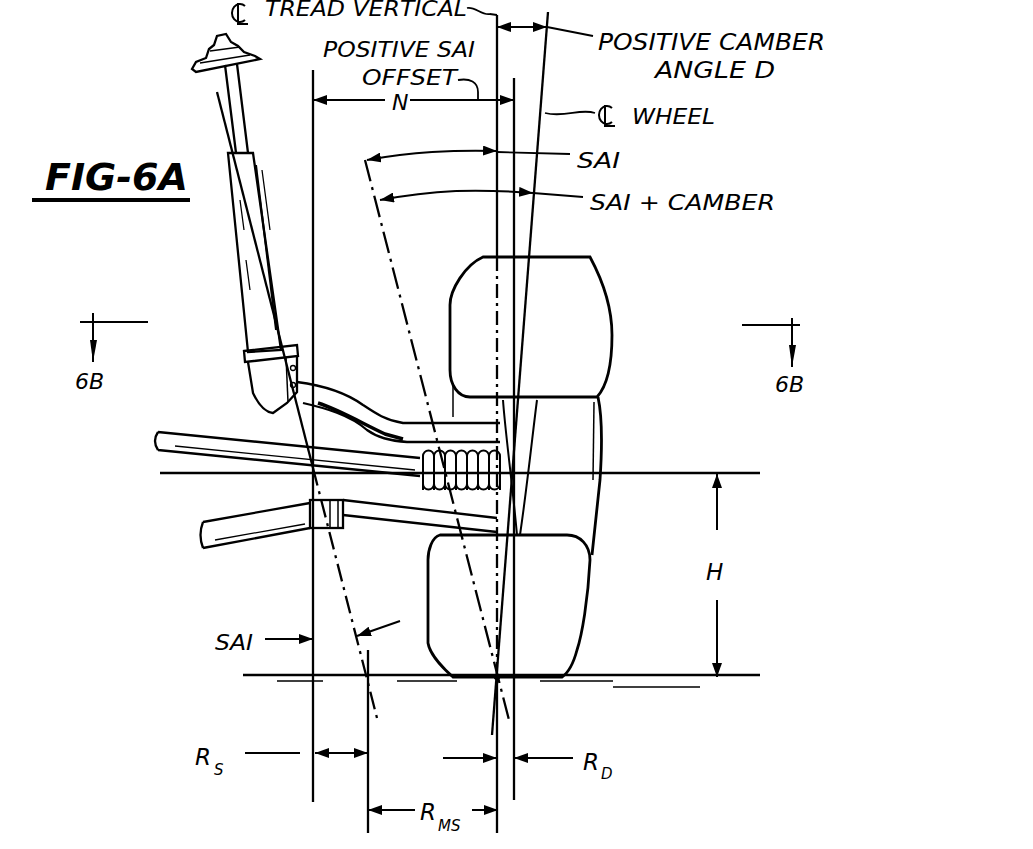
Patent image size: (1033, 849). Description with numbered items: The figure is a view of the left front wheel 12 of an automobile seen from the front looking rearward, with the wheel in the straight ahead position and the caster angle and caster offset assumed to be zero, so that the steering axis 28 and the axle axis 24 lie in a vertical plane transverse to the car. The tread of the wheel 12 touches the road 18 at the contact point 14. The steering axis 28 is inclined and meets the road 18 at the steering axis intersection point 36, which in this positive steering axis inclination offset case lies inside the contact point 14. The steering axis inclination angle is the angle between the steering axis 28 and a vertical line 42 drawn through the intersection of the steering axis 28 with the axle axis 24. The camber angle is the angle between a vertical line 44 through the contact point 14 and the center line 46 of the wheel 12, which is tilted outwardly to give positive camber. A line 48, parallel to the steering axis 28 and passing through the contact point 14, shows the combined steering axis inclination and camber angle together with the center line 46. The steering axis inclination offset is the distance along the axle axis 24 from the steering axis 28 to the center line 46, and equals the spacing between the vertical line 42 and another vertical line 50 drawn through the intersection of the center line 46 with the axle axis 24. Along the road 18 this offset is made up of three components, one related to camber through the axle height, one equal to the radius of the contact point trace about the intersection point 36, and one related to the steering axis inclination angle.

The front wheel 12 is at (622, 311).
The contact point 14 is at (494, 680).
The road 18 is at (622, 675).
The axle axis 24 is at (677, 473).
The steering axis 28 is at (250, 237).
The steering axis intersection point 36 is at (378, 678).
The vertical line 42 is at (313, 585).
The vertical line 44 is at (497, 118).
The center line 46 is at (545, 87).
The line 48 is at (412, 340).
The vertical line 50 is at (515, 700).